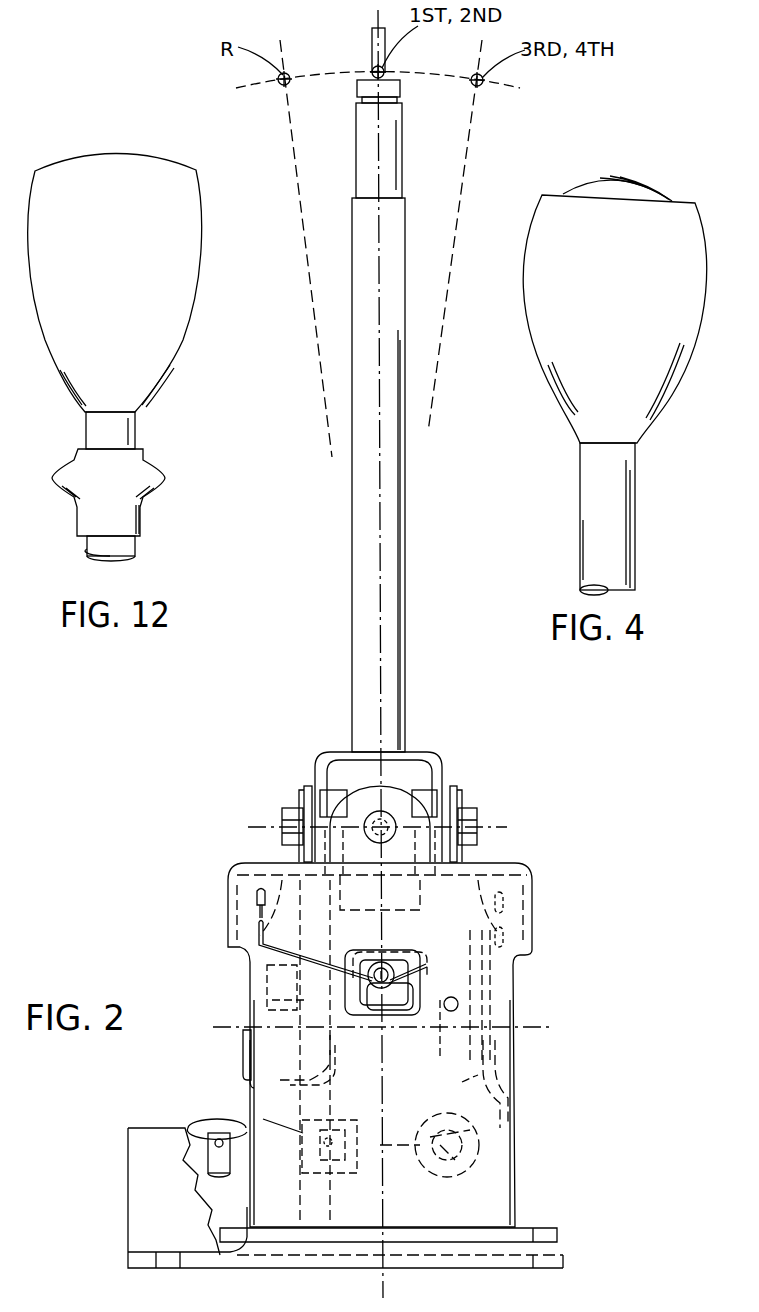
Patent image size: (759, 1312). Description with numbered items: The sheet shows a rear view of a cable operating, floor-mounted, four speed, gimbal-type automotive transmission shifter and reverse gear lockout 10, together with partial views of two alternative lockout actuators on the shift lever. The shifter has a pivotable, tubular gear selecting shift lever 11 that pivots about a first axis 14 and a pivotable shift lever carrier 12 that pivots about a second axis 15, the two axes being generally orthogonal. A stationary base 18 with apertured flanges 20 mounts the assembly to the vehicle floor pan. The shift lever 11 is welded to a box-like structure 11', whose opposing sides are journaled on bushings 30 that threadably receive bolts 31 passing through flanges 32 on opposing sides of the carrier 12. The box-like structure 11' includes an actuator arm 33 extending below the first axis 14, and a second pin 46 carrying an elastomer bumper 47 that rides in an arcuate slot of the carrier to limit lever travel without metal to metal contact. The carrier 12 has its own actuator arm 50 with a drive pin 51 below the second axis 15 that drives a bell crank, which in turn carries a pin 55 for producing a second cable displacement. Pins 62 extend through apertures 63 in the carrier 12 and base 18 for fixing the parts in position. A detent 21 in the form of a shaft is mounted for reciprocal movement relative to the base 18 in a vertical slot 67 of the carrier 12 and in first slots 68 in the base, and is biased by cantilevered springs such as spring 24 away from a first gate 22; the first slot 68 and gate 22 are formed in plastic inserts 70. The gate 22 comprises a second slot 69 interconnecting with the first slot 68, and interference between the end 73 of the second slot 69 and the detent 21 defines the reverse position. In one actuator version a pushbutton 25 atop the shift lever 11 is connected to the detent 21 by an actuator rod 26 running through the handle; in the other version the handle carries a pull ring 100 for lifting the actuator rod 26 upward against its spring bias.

In FIG. 2, the transmission shifter and reverse gear lockout 10 is at (555, 783).
In FIG. 12, the shift lever 11 is at (140, 430).
In FIG. 4, the shift lever 11 is at (607, 519).
In FIG. 2, the shift lever 11 is at (378, 416).
In FIG. 2, the box-like structure 11' is at (385, 778).
In FIG. 2, the shift lever carrier 12 is at (457, 808).
In FIG. 2, the first axis 14 is at (272, 823).
In FIG. 2, the second axis 15 is at (377, 813).
In FIG. 2, the stationary base 18 is at (447, 1217).
In FIG. 2, the apertured flanges 20 is at (220, 1230).
In FIG. 2, the detent 21 is at (373, 958).
In FIG. 2, the first gate 22 is at (455, 1000).
In FIG. 2, the cantilevered spring 24 is at (270, 943).
In FIG. 4, the pushbutton 25 is at (615, 185).
In FIG. 2, the actuator rod 26 is at (372, 45).
In FIG. 2, the bushings 30 is at (337, 793).
In FIG. 2, the bolts 31 is at (287, 840).
In FIG. 2, the flanges 32 is at (308, 787).
In FIG. 2, the actuator arm 33 is at (333, 1075).
In FIG. 2, the second pin 46 is at (280, 982).
In FIG. 2, the elastomer bumper 47 is at (305, 992).
In FIG. 2, the carrier actuator arm 50 is at (462, 1082).
In FIG. 2, the drive pin 51 is at (480, 1155).
In FIG. 2, the pin 55 is at (215, 1133).
In FIG. 2, the pins 62 is at (246, 1028).
In FIG. 2, the apertures 63 is at (456, 1010).
In FIG. 2, the slot 67 is at (428, 963).
In FIG. 2, the first slot 68 is at (400, 960).
In FIG. 2, the second slot 69 is at (384, 990).
In FIG. 2, the plastic inserts 70 is at (405, 965).
In FIG. 2, the end of second slot 73 is at (410, 1000).
In FIG. 12, the pull ring 100 is at (137, 490).